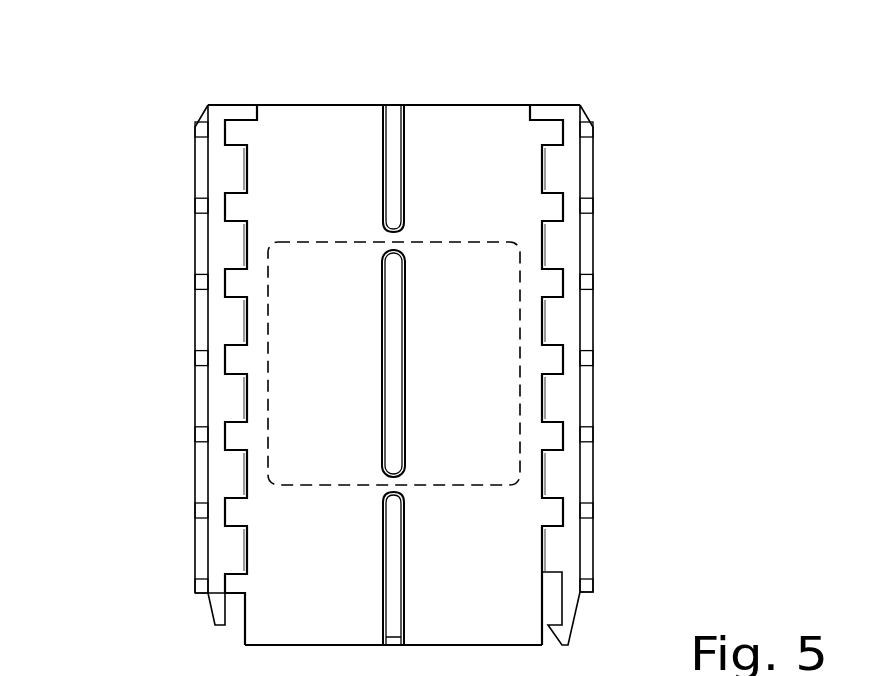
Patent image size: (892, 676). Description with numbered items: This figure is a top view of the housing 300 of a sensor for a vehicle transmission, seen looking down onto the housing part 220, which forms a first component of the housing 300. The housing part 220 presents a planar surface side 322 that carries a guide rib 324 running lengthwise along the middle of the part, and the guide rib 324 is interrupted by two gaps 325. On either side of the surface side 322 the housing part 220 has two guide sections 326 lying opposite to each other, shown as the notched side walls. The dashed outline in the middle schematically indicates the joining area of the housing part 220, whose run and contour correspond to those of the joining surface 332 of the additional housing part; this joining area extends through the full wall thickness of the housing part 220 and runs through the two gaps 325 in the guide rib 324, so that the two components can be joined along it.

The housing 300 is at (168, 118).
The planar surface side 322 is at (468, 553).
The guide sections 326 is at (218, 323).
The housing part 220 is at (567, 397).
The guide rib 324 is at (395, 115).
The gaps 325 is at (395, 242).
The joining surface 332 is at (520, 322).